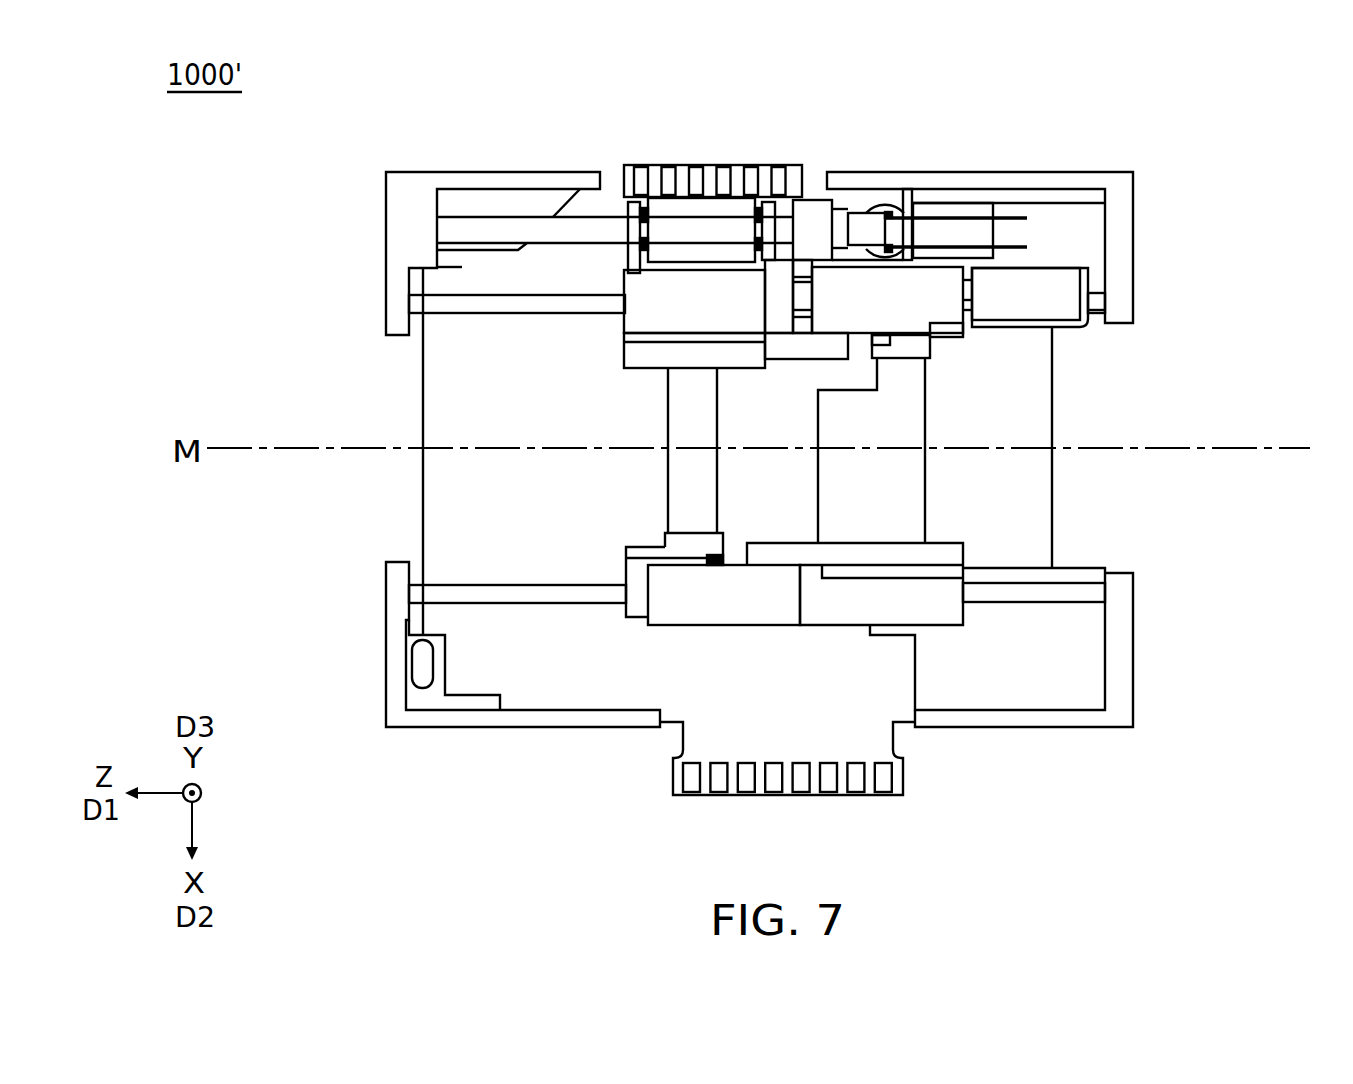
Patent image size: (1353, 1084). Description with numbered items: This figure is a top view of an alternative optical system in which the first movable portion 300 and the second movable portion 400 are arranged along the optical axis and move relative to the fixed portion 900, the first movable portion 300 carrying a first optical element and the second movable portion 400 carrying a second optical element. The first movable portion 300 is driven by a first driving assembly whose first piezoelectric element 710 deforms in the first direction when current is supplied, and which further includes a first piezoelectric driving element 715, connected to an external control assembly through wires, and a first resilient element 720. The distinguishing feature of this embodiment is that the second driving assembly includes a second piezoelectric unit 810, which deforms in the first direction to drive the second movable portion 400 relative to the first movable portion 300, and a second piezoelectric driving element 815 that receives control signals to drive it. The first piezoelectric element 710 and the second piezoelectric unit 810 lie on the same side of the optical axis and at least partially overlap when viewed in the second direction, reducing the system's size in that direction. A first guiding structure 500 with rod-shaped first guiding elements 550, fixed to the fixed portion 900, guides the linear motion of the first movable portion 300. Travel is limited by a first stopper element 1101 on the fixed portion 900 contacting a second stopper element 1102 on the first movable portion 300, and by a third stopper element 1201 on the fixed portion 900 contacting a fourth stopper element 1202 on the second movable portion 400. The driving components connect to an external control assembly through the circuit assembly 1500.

The fixed portion 900 is at (398, 217).
The first stopper element 1101 is at (447, 266).
The first piezoelectric element 710 is at (514, 226).
The second stopper element 1102 is at (620, 258).
The first resilient element 720 is at (695, 228).
The second piezoelectric unit 810 is at (803, 294).
The first piezoelectric driving element 715 is at (951, 231).
The second piezoelectric driving element 815 is at (1052, 290).
The first guiding structure 500 is at (467, 303).
The first guiding element 550 is at (467, 592).
The first movable portion 300 is at (636, 574).
The second movable portion 400 is at (925, 608).
The fourth stopper element 1202 is at (973, 613).
The third stopper element 1201 is at (1103, 653).
The circuit assembly 1500 is at (858, 768).